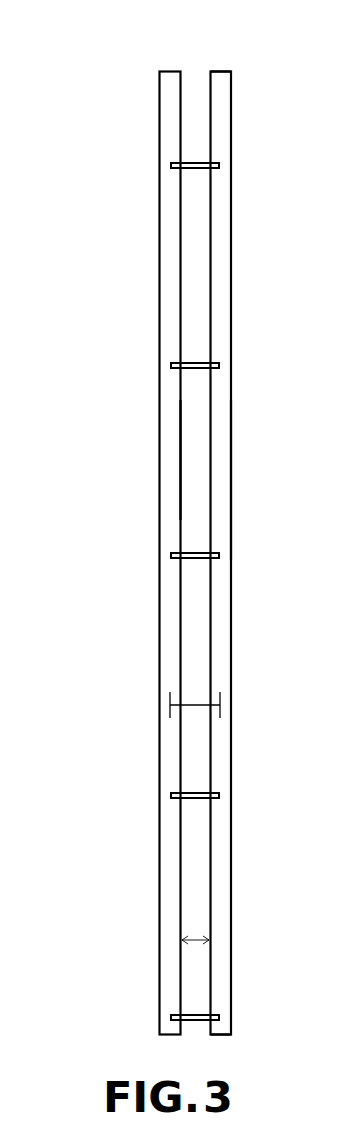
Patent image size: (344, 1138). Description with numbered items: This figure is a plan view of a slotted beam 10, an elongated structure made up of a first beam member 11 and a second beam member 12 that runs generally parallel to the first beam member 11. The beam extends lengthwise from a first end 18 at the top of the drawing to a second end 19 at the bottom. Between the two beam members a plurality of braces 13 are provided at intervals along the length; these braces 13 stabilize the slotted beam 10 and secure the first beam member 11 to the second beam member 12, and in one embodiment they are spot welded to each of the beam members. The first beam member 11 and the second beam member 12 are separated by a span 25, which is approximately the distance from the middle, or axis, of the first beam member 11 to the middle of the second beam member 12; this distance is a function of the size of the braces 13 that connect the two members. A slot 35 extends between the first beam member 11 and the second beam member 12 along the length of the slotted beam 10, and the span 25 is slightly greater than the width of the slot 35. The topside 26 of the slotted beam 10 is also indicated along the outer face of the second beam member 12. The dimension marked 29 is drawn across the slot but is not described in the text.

The slotted beam 10 is at (162, 530).
The first beam member 11 is at (159, 257).
The second beam member 12 is at (231, 257).
The braces 13 is at (193, 160).
The first end 18 is at (222, 71).
The second end 19 is at (218, 1036).
The span 25 is at (195, 703).
The topside 26 is at (231, 463).
The gap width 29 is at (195, 938).
The slot 35 is at (187, 460).